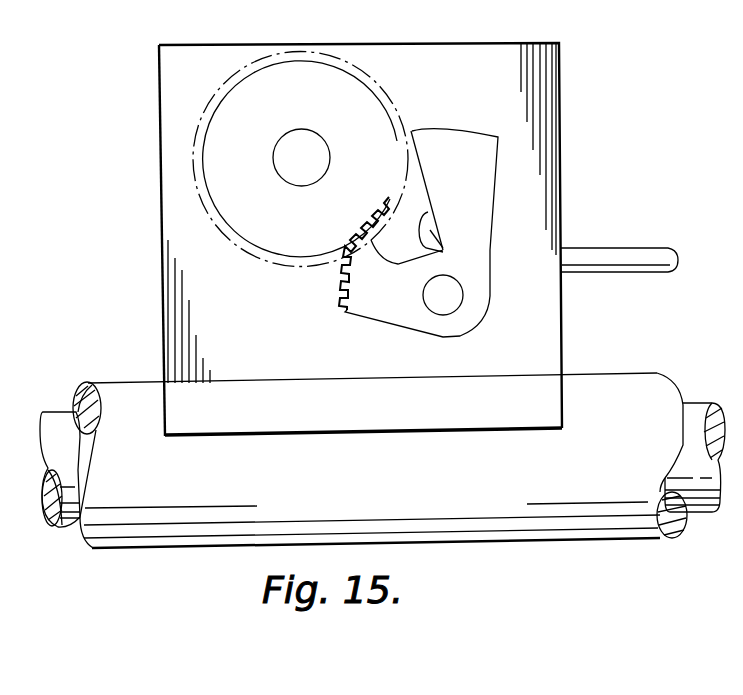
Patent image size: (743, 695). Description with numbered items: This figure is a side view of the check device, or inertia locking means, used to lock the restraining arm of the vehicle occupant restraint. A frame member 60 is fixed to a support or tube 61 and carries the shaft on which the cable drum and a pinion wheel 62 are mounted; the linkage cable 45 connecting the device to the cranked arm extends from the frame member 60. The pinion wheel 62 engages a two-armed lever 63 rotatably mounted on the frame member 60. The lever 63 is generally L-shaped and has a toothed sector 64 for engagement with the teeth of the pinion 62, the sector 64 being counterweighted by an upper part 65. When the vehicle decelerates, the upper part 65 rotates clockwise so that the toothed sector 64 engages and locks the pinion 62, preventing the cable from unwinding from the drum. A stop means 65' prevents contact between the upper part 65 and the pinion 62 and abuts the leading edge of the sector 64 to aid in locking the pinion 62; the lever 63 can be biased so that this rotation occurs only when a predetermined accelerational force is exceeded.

The frame member 60 is at (266, 364).
The support or tube 61 is at (300, 485).
The pinion wheel 62 is at (197, 133).
The two-armed lever 63 is at (480, 272).
The toothed sector 64 is at (342, 303).
The upper part 65 is at (454, 167).
The stop means 65' is at (445, 208).
The cable 45 is at (622, 268).